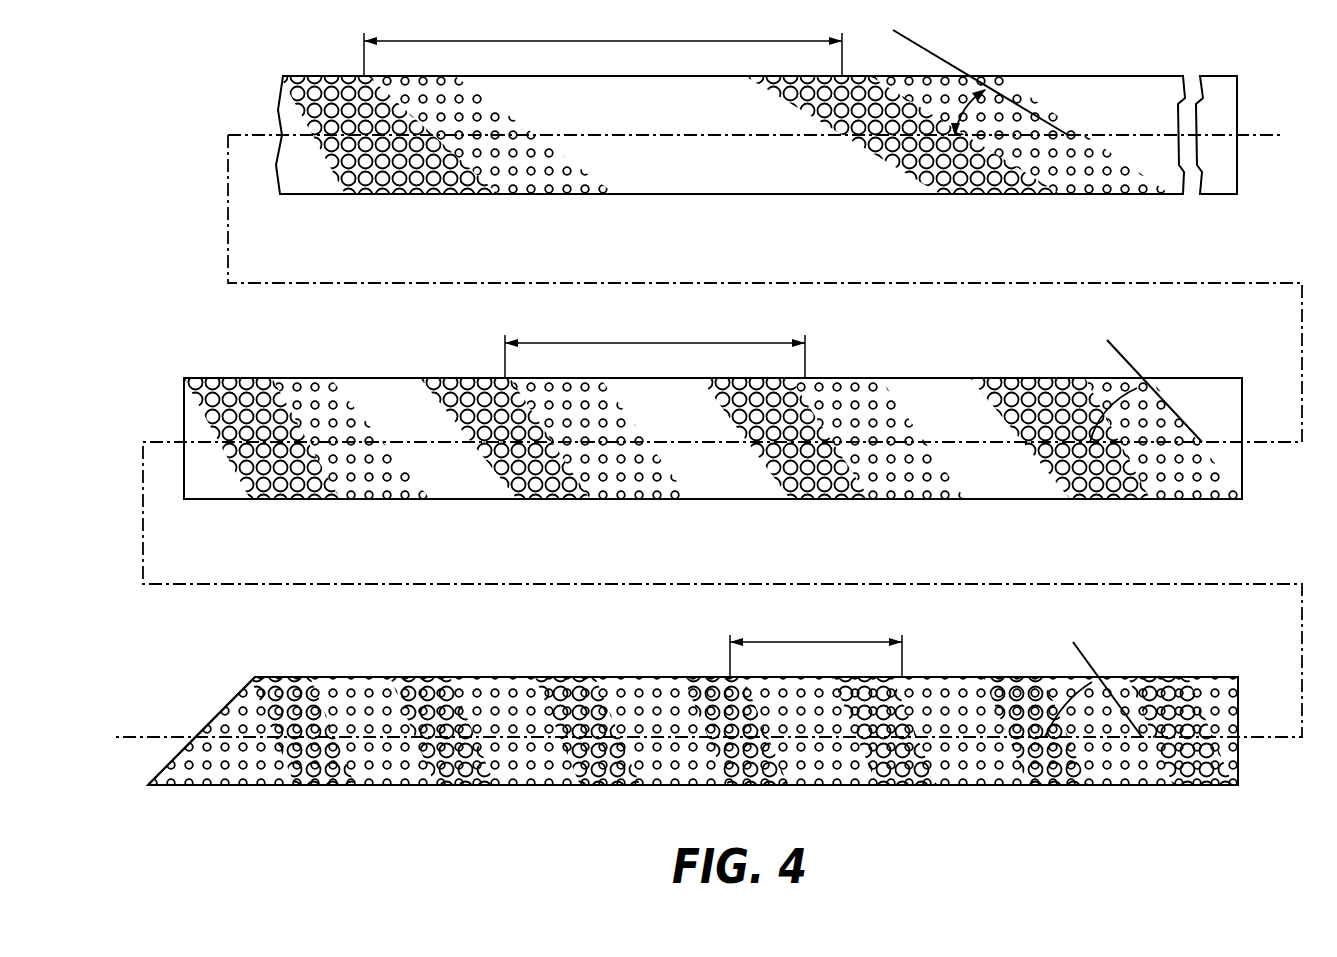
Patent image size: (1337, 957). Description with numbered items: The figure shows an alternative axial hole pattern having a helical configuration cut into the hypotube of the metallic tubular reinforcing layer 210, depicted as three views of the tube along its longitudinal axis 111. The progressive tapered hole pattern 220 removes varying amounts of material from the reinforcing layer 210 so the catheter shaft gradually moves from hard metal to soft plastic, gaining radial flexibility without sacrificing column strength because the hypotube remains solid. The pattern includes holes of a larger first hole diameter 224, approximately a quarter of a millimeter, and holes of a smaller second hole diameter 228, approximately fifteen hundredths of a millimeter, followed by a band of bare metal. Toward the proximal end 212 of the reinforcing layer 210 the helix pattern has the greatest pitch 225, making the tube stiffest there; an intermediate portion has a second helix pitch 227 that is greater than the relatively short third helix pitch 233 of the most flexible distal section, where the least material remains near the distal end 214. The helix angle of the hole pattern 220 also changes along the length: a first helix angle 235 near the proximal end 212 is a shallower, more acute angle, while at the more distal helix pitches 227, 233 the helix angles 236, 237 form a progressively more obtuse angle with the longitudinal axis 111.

The longitudinal axis 111 is at (703, 137).
The metallic tubular reinforcing layer 210 is at (347, 197).
The proximal end 212 is at (1237, 76).
The distal end 214 is at (148, 783).
The hole pattern 220 is at (1170, 475).
The first hole diameter 224 is at (466, 188).
The greatest pitch 225 is at (597, 41).
The second helix pitch 227 is at (655, 343).
The second hole diameter 228 is at (540, 180).
The third helix pitch 233 is at (808, 642).
The first helix angle 235 is at (957, 100).
The helix angle 236 is at (1105, 405).
The helix angle 237 is at (1047, 735).